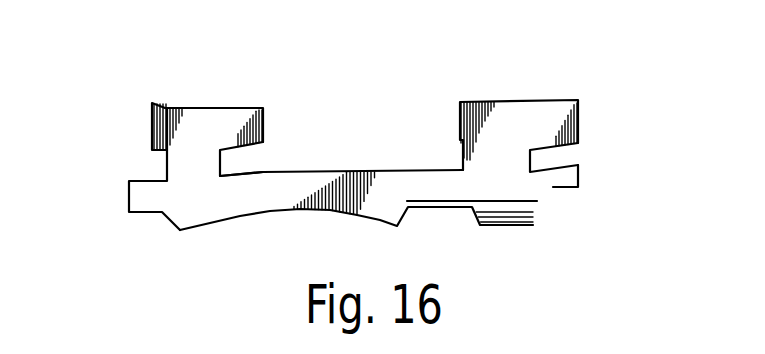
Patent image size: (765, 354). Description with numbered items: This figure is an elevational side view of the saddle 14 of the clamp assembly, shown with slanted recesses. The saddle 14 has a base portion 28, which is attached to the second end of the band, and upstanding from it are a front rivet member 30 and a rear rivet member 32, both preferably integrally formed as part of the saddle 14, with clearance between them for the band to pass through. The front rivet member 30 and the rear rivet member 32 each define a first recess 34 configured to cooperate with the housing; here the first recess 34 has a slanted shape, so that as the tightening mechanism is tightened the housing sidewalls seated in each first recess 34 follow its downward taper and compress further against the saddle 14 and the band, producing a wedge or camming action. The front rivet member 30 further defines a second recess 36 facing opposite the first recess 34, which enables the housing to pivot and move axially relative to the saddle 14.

The saddle 14 is at (440, 190).
The base portion 28 is at (265, 193).
The front rivet member 30 is at (196, 151).
The rear rivet member 32 is at (503, 140).
The first recess 34 is at (244, 170).
The second recess 36 is at (165, 167).